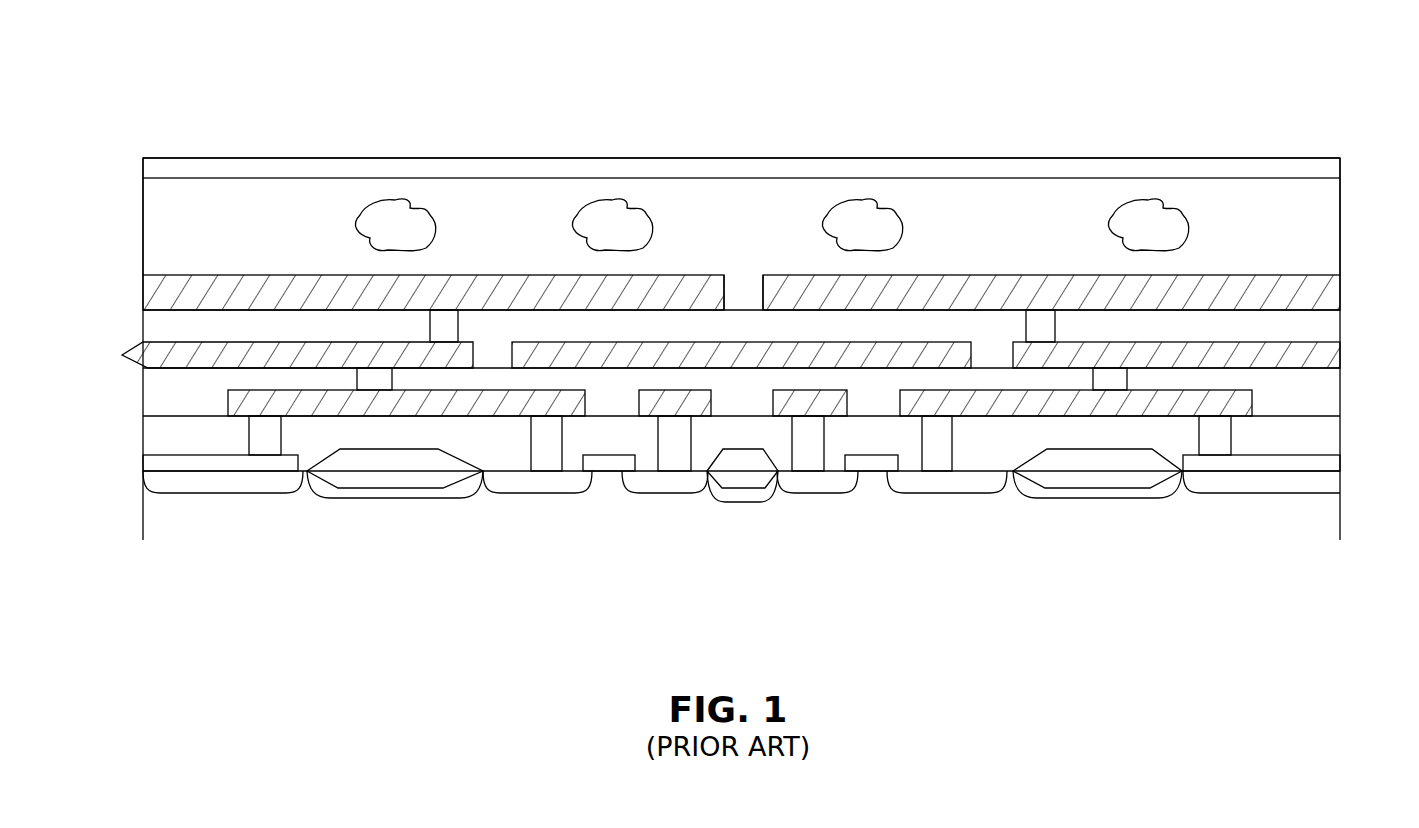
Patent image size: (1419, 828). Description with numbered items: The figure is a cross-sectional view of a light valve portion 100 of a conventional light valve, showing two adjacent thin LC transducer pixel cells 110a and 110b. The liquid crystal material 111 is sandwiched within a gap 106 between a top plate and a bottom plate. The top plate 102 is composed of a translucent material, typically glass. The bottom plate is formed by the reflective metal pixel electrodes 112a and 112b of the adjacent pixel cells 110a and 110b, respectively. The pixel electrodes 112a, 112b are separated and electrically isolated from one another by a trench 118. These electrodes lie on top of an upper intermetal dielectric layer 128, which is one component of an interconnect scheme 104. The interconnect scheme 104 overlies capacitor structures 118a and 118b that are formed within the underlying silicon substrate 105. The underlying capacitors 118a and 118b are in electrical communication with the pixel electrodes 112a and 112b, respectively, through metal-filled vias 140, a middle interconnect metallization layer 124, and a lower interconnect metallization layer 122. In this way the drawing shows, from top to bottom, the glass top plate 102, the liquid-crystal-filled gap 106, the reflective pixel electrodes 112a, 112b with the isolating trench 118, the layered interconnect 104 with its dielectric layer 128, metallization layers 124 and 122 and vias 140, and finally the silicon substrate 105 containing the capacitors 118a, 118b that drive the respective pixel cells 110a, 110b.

The light valve portion 100 is at (202, 103).
The top plate 102 is at (1332, 172).
The interconnect scheme 104 is at (734, 278).
The silicon substrate 105 is at (700, 555).
The gap 106 is at (1330, 215).
The pixel cell 110a is at (441, 555).
The pixel cell 110b is at (1041, 555).
The liquid crystal material 111 is at (407, 208).
The pixel electrode 112a is at (470, 283).
The pixel electrode 112b is at (1013, 288).
The trench 118 is at (743, 278).
The capacitor structure 118a is at (530, 507).
The capacitor structure 118b is at (985, 509).
The lower interconnect metallization layer 122 is at (1232, 405).
The middle interconnect metallization layer 124 is at (1335, 352).
The upper intermetal dielectric layer 128 is at (777, 198).
The metal-filled vias 140 is at (440, 322).